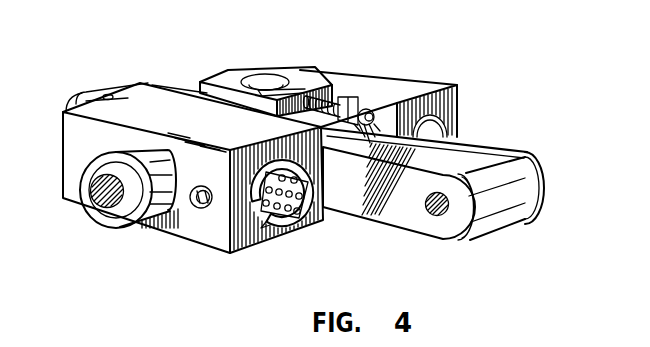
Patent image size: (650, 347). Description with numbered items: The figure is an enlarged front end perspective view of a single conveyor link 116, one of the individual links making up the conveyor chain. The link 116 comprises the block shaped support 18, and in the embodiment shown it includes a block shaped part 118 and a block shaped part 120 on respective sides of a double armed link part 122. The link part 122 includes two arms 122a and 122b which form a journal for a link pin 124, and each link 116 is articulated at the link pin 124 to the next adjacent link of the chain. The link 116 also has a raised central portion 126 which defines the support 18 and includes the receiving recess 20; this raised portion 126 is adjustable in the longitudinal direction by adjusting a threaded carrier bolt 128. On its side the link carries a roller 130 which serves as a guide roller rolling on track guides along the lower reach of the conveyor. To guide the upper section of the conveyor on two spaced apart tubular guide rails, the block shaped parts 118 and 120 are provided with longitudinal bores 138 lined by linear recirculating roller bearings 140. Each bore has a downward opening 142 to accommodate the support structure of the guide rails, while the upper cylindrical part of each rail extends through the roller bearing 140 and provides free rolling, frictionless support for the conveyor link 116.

The block shaped support 18 is at (240, 73).
The receiving recess 20 is at (267, 80).
The conveyor link 116 is at (392, 72).
The block shaped part 118 is at (202, 237).
The block shaped part 120 is at (455, 102).
The double armed link part 122 is at (447, 232).
The arm 122a is at (408, 207).
The arm 122b is at (490, 145).
The link pin 124 is at (510, 173).
The raised central portion 126 is at (303, 75).
The threaded carrier bolt 128 is at (333, 100).
The roller 130 is at (120, 218).
The longitudinal bore 138 is at (283, 230).
The linear recirculating roller bearing 140 is at (315, 227).
The downward opening 142 is at (273, 233).